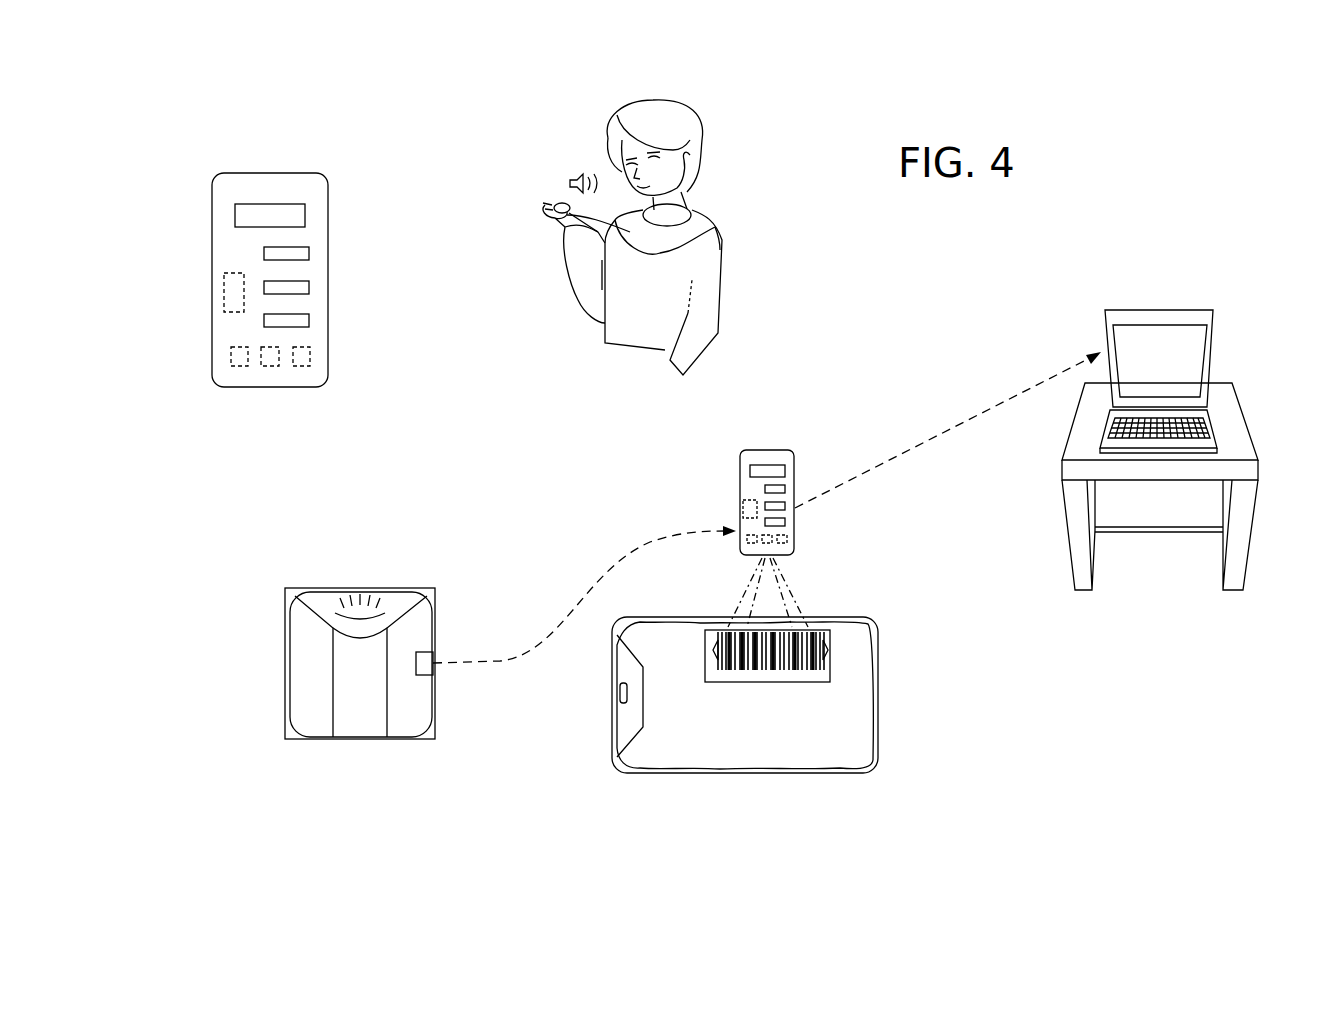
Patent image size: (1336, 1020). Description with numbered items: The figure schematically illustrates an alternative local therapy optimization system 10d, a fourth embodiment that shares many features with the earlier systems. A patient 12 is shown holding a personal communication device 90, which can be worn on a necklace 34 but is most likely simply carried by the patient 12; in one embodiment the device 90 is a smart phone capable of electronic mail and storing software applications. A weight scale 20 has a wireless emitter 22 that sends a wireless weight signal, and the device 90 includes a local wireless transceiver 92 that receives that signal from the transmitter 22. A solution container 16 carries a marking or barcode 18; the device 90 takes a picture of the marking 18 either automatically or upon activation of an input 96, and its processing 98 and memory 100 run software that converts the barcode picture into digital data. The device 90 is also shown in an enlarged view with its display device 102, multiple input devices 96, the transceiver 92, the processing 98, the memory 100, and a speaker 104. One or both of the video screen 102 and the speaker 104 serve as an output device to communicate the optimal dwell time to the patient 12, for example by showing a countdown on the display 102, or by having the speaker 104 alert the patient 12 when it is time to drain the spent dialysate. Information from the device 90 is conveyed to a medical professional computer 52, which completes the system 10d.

The system 10d is at (459, 140).
The patient 12 is at (718, 233).
The solution container 16 is at (853, 660).
The marking or barcode 18 is at (830, 632).
The scale 20 is at (332, 588).
The wireless emitter 22 is at (430, 657).
The necklace 34 is at (720, 250).
The medical professional computer 52 is at (1122, 310).
The personal communication device 90 is at (336, 376).
The local wireless transceiver 92 is at (232, 292).
The input devices 96 is at (300, 253).
The processing 98 is at (240, 356).
The memory 100 is at (270, 362).
The display device 102 is at (270, 215).
The speaker 104 is at (302, 362).